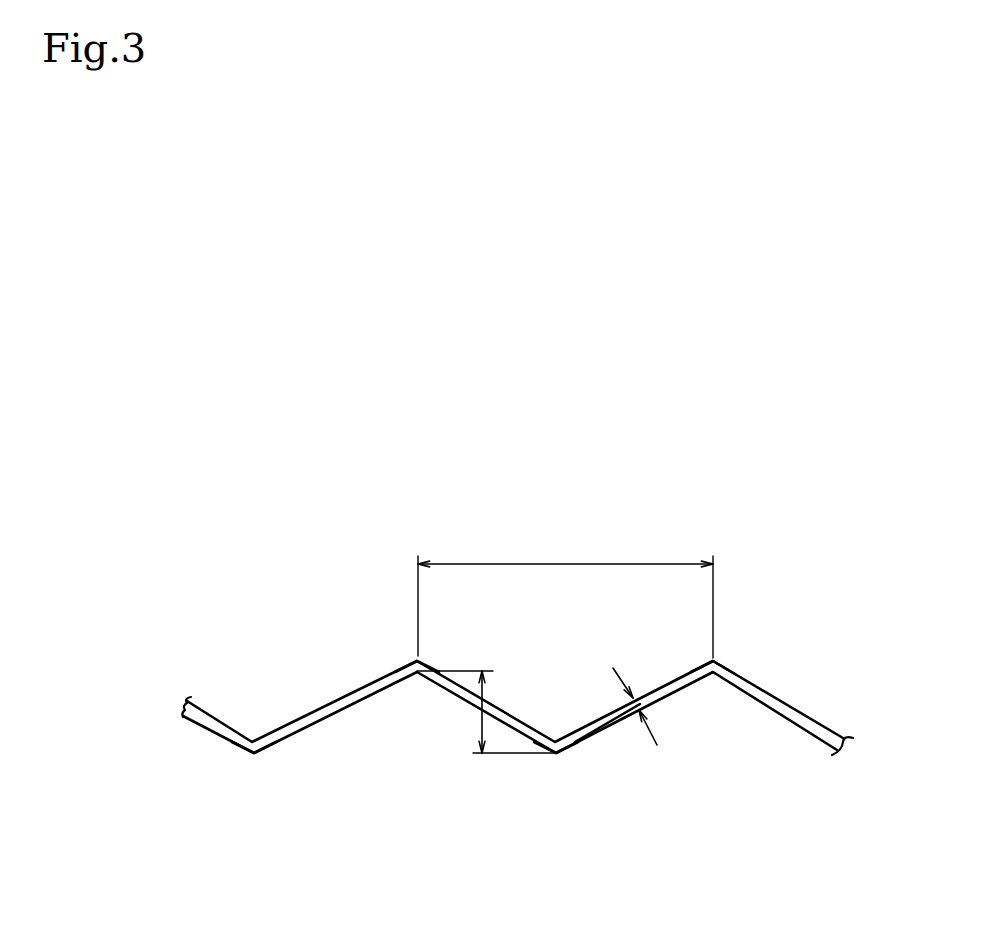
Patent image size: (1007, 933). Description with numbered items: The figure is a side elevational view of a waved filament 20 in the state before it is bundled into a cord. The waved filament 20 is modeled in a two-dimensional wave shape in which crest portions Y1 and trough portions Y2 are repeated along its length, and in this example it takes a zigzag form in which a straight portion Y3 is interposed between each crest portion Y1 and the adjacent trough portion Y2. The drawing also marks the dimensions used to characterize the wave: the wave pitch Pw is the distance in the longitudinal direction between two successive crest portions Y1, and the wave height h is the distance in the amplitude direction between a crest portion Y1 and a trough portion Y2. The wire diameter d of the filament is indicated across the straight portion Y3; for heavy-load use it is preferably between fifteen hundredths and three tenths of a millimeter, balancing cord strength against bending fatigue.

The waved filament 20 is at (765, 565).
The crest portion Y1 is at (410, 652).
The trough portion Y2 is at (255, 755).
The straight portion Y3 is at (602, 730).
The wave pitch Pw is at (565, 595).
The wave height h is at (486, 712).
The wire diameter d is at (645, 706).